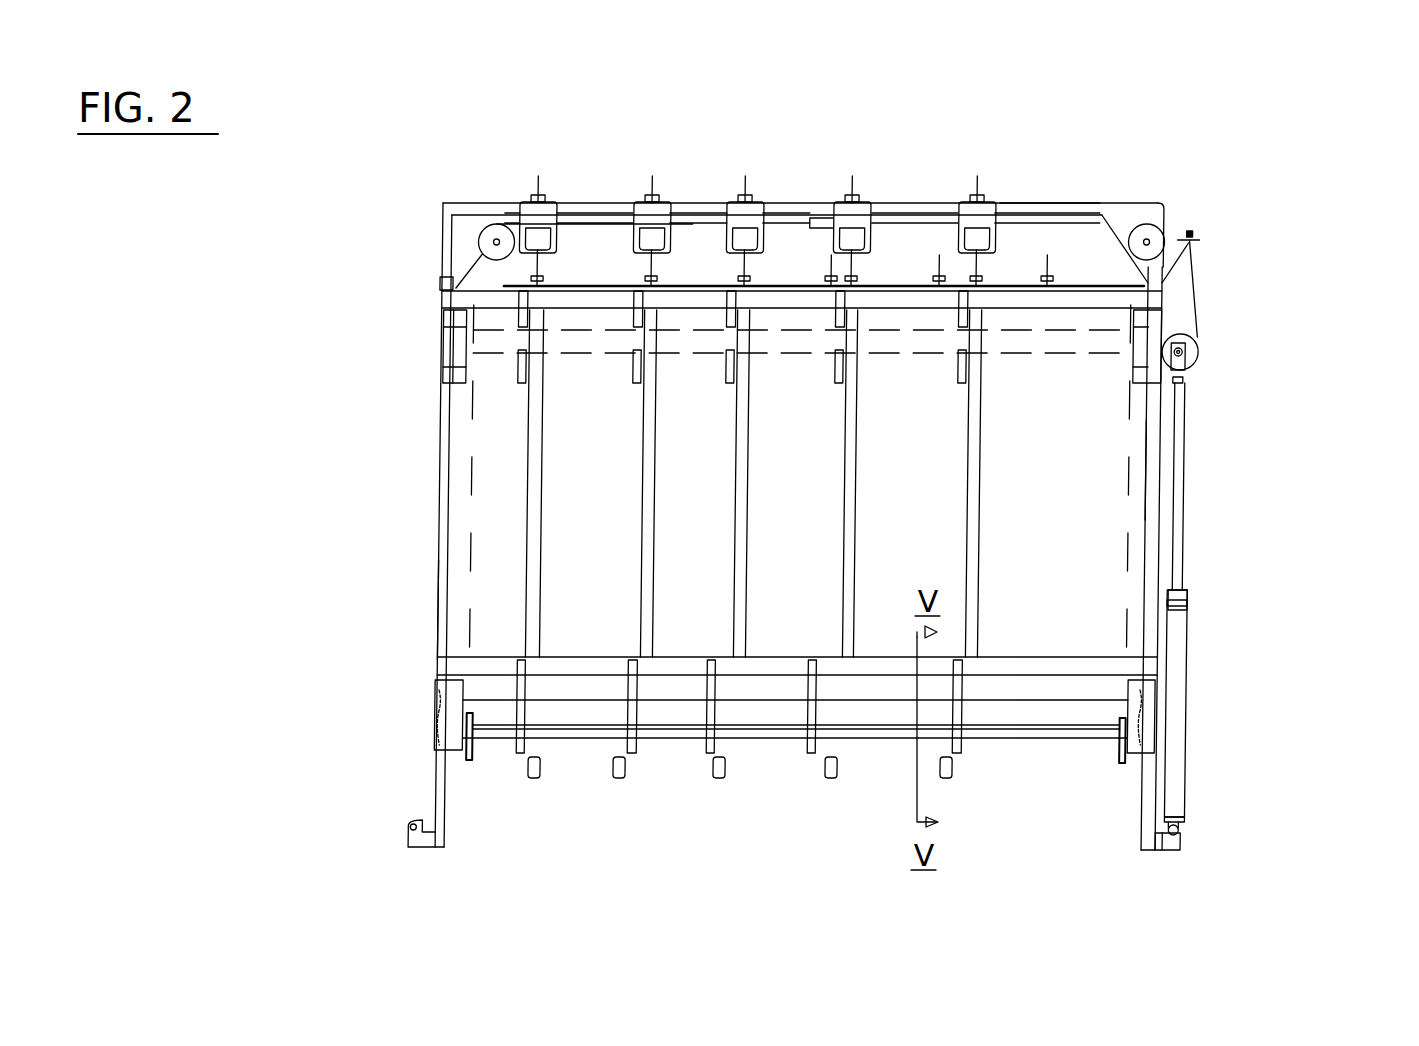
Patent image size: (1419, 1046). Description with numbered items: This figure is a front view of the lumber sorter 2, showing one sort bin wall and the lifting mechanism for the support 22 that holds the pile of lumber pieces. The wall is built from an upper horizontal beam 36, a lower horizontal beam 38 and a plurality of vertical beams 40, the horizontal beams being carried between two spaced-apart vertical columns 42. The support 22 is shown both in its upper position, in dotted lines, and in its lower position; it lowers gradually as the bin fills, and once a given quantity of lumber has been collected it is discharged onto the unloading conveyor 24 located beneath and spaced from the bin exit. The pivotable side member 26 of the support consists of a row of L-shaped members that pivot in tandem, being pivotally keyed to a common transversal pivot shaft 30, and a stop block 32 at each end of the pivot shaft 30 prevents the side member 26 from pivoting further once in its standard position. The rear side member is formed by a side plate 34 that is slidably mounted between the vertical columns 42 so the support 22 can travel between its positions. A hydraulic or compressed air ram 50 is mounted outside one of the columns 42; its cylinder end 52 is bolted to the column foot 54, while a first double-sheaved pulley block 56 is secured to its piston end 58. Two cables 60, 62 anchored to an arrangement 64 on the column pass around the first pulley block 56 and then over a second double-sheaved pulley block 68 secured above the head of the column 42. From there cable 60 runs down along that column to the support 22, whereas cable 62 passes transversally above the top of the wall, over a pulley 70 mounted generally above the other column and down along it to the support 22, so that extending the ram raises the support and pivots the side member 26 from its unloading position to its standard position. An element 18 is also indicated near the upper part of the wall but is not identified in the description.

The lumber sorter 2 is at (312, 256).
The upper support bar 18 is at (908, 200).
The support 22 is at (490, 340).
The unloading conveyor 24 is at (542, 778).
The pivotable side member 26 is at (521, 750).
The pivot shaft 30 is at (872, 750).
The stop block 32 is at (468, 748).
The side plate 34 is at (683, 718).
The upper horizontal beam 36 is at (586, 297).
The lower horizontal beam 38 is at (1037, 670).
The vertical beams 40 is at (545, 472).
The vertical columns 42 is at (443, 600).
The ram 50 is at (1200, 588).
The cylinder end 52 is at (1195, 808).
The column foot 54 is at (1168, 845).
The first double-sheaved pulley block 56 is at (1188, 345).
The piston end 58 is at (1190, 369).
The cable 60 is at (1127, 505).
The cable 62 is at (1062, 215).
The arrangement 64 is at (1195, 237).
The second double-sheaved pulley block 68 is at (1150, 240).
The pulley 70 is at (495, 240).